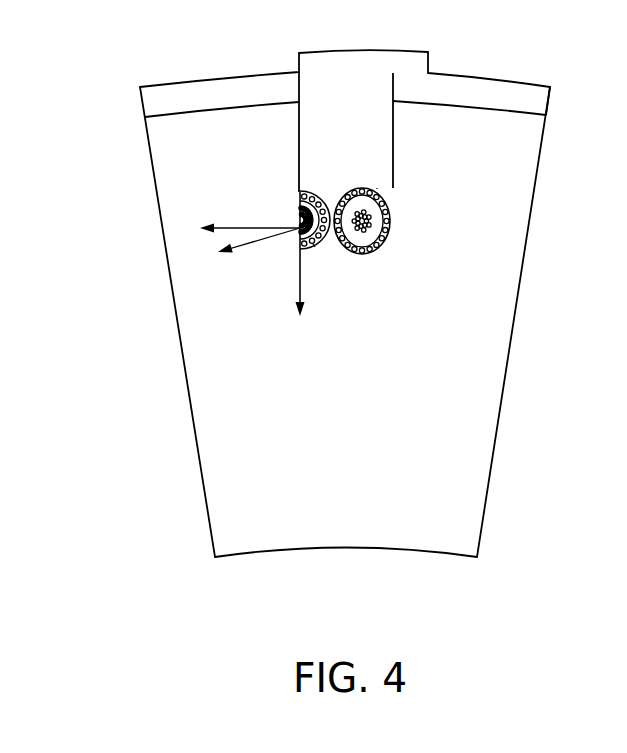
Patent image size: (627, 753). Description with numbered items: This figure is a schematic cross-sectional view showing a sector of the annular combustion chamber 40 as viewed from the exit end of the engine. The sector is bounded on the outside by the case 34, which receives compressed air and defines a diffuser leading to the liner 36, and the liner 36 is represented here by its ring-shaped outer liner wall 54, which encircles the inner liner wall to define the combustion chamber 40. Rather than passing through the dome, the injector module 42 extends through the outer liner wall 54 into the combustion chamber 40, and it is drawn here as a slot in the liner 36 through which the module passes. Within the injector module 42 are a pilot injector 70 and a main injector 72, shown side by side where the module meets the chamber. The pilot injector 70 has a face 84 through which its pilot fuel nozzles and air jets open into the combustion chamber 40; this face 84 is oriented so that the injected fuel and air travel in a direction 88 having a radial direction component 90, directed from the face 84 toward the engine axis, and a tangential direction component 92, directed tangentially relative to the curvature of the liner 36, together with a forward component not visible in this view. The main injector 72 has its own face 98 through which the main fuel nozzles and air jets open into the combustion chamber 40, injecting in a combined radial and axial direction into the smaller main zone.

The case 34 is at (507, 82).
The liner 36 is at (533, 108).
The combustion chamber 40 is at (432, 330).
The injector module 42 is at (385, 152).
The outer liner wall 54 is at (222, 107).
The pilot injector 70 is at (302, 205).
The main injector 72 is at (370, 225).
The face 84 is at (317, 248).
The direction 88 is at (255, 248).
The radial direction component 90 is at (302, 285).
The tangential direction component 92 is at (227, 226).
The face 98 is at (377, 188).